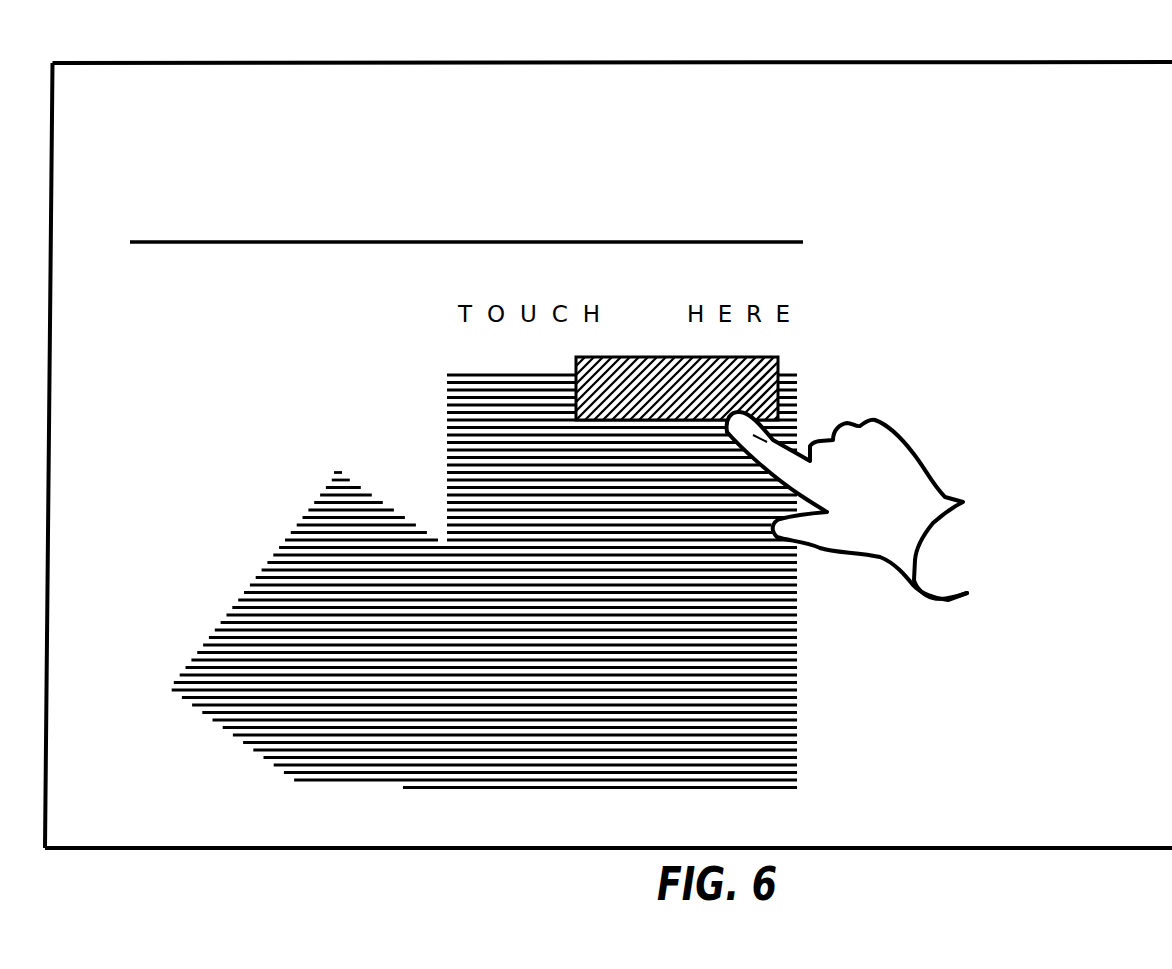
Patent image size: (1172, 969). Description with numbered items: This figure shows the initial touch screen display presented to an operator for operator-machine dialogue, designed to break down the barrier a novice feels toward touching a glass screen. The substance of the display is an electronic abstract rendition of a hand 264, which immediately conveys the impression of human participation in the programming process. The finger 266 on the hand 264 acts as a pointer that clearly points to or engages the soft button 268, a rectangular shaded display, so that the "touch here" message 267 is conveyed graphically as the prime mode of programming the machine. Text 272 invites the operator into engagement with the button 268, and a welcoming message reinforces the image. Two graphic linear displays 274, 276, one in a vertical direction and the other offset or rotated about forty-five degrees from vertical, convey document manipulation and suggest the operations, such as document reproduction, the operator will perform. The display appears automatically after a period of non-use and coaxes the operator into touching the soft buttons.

The hand 264 is at (887, 457).
The finger 266 is at (382, 60).
The touch here message 267 is at (782, 417).
The soft button 268 is at (778, 357).
The text 272 is at (420, 190).
The graphic linear display 274 is at (450, 444).
The graphic linear display 276 is at (278, 567).